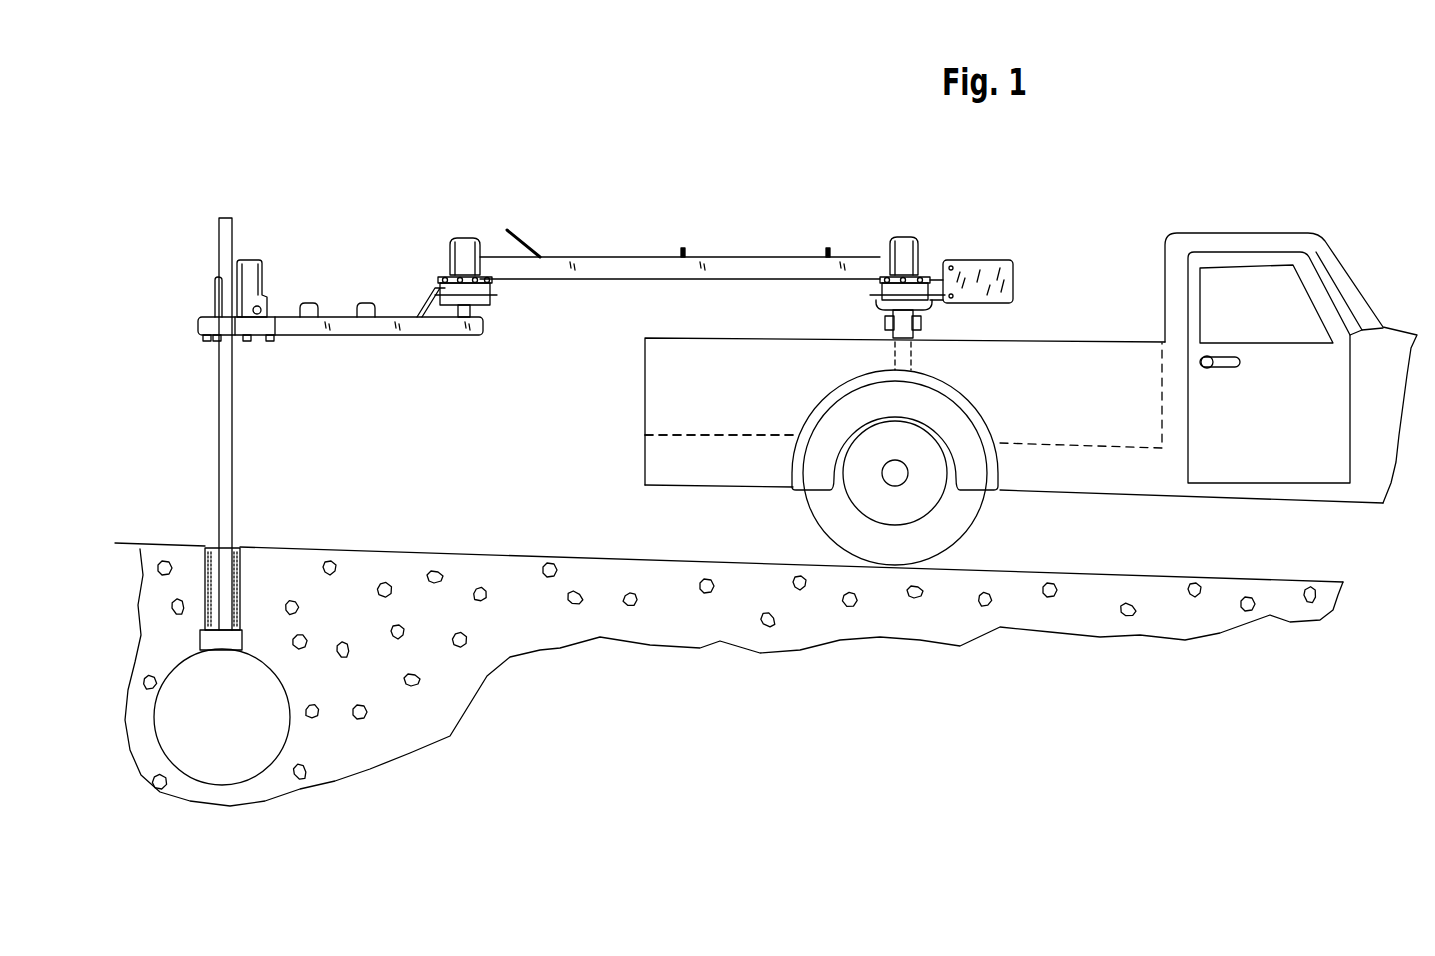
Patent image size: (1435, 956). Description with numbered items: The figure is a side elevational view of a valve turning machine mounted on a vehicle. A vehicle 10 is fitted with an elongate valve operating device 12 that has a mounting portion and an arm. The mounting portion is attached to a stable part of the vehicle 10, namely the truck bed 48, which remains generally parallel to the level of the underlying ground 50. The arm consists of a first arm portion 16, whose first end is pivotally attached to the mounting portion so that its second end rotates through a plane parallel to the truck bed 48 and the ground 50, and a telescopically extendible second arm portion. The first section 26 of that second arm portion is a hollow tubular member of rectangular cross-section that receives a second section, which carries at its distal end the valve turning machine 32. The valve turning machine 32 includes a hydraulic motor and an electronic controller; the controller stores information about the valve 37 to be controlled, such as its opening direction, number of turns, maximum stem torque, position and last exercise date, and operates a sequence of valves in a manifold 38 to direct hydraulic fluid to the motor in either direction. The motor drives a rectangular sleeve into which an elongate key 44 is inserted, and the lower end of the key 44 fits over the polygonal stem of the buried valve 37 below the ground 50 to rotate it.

The vehicle 10 is at (643, 458).
The valve operating device 12 is at (652, 205).
The first arm portion 16 is at (578, 257).
The first section of second arm portion 26 is at (335, 305).
The valve turning machine 32 is at (198, 325).
The valve 37 is at (290, 733).
The manifold 38 is at (1003, 262).
The key 44 is at (218, 450).
The truck bed 48 is at (672, 432).
The ground 50 is at (372, 553).